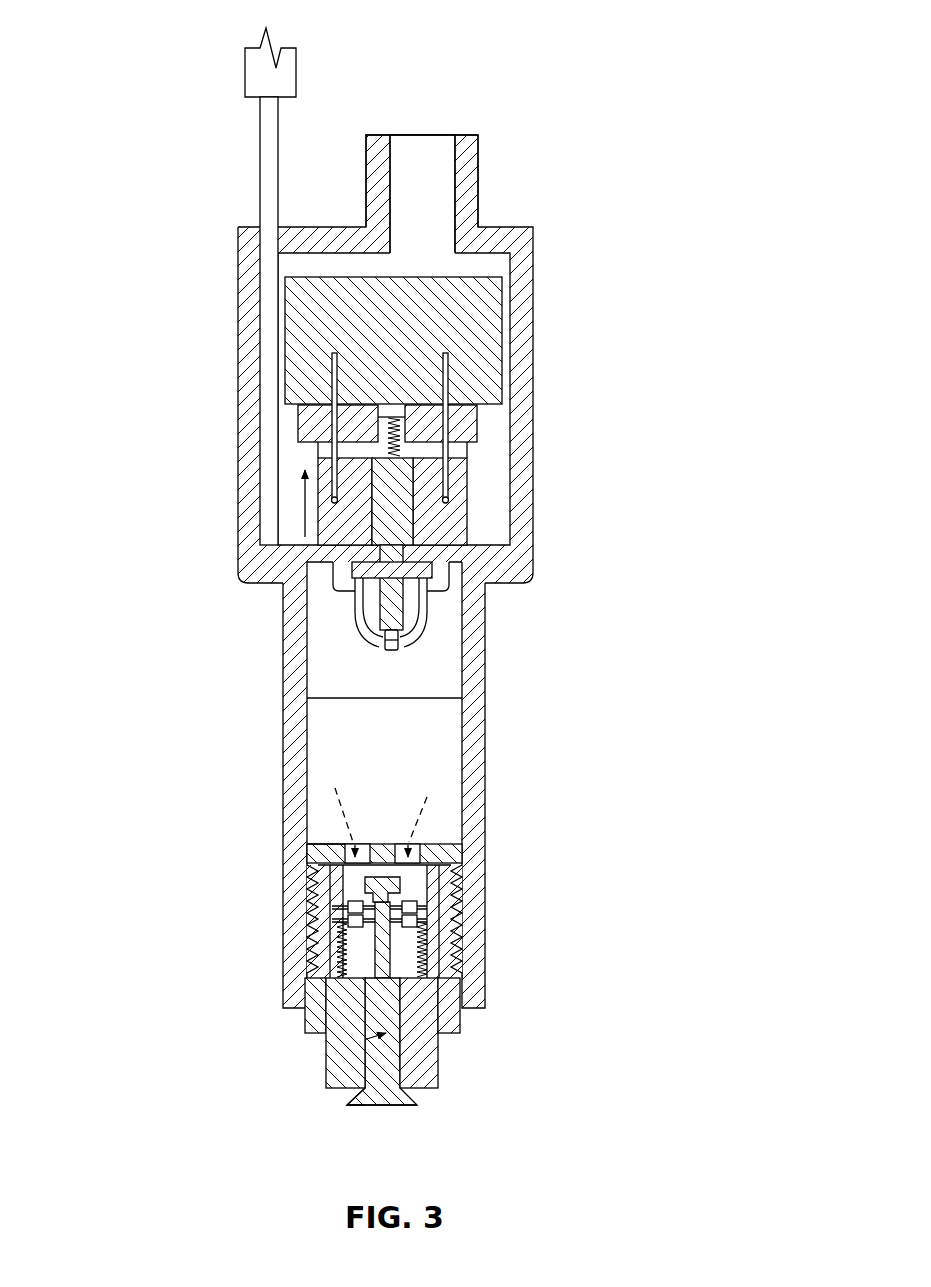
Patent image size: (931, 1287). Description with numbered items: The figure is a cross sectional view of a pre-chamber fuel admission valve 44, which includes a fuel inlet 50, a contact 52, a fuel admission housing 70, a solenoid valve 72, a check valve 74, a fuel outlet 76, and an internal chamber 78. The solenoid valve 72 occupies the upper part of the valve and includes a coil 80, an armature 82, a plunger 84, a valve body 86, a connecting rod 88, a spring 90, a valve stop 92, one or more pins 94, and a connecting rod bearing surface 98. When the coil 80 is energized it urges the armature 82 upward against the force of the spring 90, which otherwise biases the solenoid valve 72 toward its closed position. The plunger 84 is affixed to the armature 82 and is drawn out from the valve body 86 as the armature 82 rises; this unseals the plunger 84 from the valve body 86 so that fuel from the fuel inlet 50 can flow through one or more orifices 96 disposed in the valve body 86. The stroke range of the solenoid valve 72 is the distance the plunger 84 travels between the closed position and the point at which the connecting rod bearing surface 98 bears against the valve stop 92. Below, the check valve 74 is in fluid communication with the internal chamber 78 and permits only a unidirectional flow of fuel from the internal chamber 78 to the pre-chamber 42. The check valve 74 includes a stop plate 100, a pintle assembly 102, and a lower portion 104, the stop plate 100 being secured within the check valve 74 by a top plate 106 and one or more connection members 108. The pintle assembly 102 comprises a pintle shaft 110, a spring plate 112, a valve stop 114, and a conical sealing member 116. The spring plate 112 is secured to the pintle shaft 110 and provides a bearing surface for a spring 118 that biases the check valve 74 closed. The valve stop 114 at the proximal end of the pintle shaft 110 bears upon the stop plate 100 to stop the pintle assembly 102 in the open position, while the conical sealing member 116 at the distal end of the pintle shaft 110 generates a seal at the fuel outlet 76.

The pre-chamber 42 is at (380, 1137).
The pre-chamber fuel admission valve 44 is at (129, 40).
The fuel inlet 50 is at (245, 72).
The contact 52 is at (424, 124).
The fuel admission housing 70 is at (533, 298).
The solenoid valve 72 is at (547, 390).
The check valve 74 is at (545, 966).
The fuel outlet 76 is at (391, 1124).
The internal chamber 78 is at (445, 722).
The coil 80 is at (450, 512).
The armature 82 is at (377, 497).
The plunger 84 is at (393, 627).
The valve body 86 is at (422, 627).
The connecting rod 88 is at (377, 452).
The spring 90 is at (334, 425).
The valve stop 92 is at (388, 433).
The pins 94 is at (447, 387).
The orifices 96 is at (374, 649).
The connecting rod bearing surface 98 is at (397, 457).
The stop plate 100 is at (317, 849).
The pintle assembly 102 is at (363, 1037).
The lower portion 104 is at (423, 1053).
The top plate 106 is at (338, 862).
The connection members 108 is at (428, 882).
The pintle shaft 110 is at (363, 1092).
The spring plate 112 is at (428, 913).
The valve stop 114 is at (375, 872).
The conical sealing member 116 is at (410, 1097).
The spring 118 is at (427, 975).